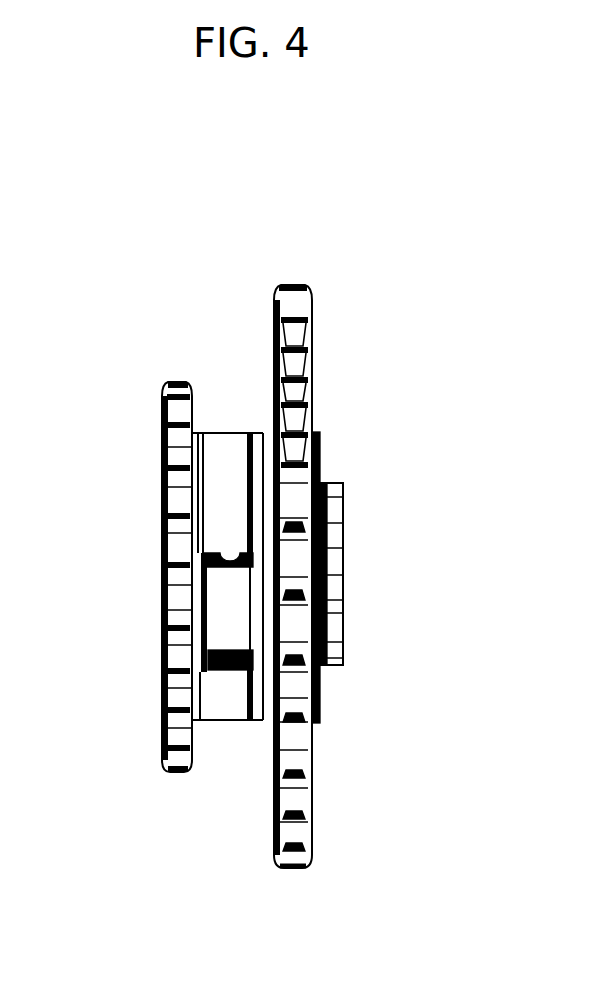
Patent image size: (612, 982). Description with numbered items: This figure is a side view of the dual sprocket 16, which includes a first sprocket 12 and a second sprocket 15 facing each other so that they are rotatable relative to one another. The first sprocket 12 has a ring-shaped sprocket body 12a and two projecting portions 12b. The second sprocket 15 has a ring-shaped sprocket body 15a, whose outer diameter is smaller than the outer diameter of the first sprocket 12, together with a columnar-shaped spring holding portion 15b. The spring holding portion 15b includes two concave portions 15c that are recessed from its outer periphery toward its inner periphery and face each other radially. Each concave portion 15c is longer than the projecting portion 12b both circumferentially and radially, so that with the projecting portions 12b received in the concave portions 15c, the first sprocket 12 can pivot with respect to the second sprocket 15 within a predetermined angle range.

The dual sprocket 16 is at (341, 248).
The first sprocket 12 is at (326, 313).
The sprocket body 12a is at (298, 443).
The projecting portion 12b is at (235, 622).
The second sprocket 15 is at (140, 385).
The sprocket body 15a is at (175, 497).
The spring holding portion 15b is at (231, 708).
The concave portion 15c is at (228, 551).